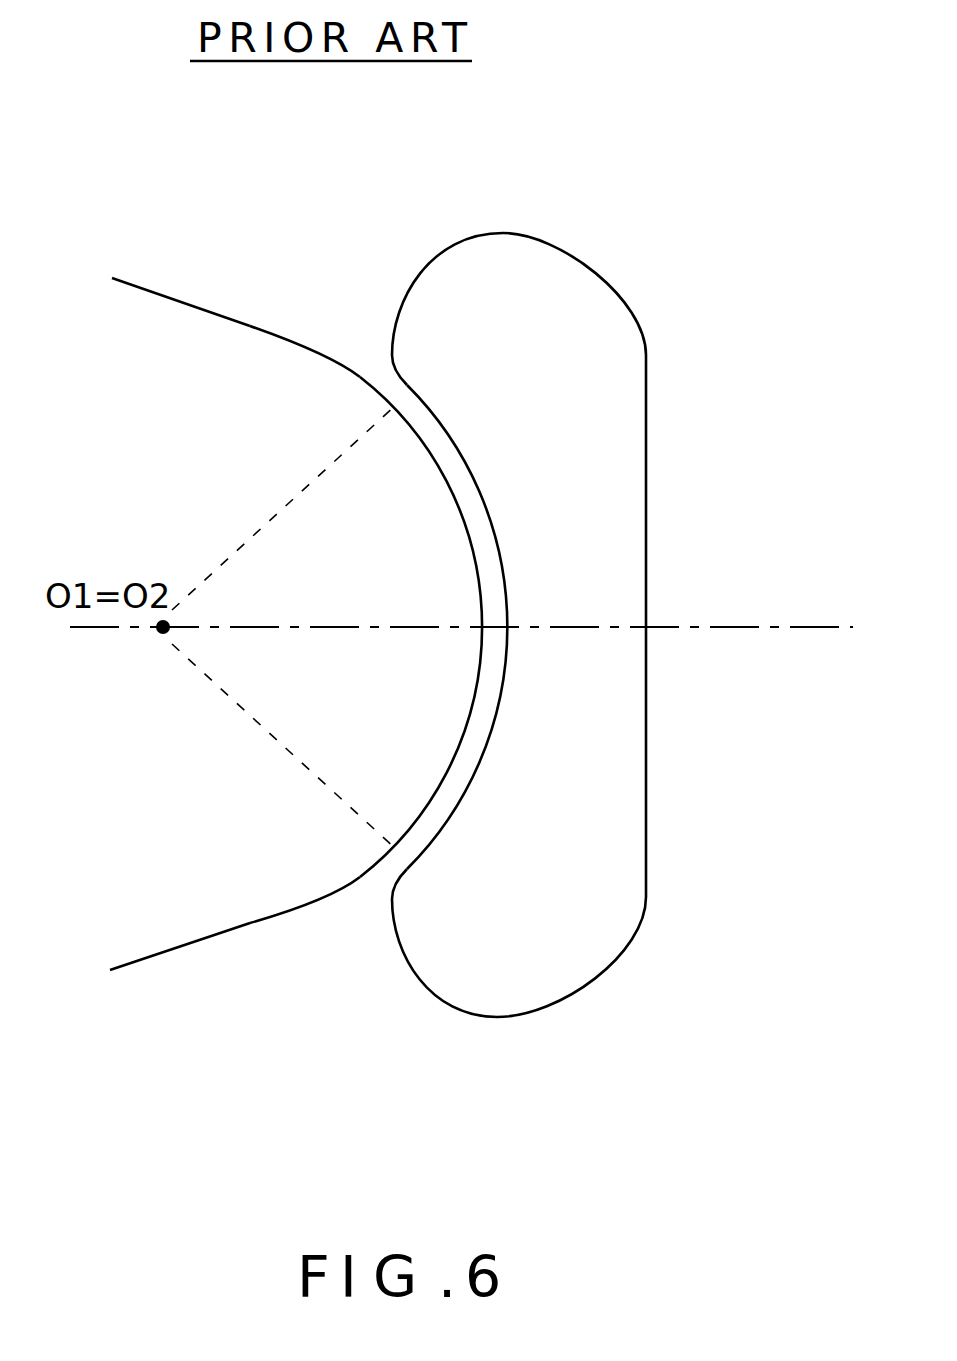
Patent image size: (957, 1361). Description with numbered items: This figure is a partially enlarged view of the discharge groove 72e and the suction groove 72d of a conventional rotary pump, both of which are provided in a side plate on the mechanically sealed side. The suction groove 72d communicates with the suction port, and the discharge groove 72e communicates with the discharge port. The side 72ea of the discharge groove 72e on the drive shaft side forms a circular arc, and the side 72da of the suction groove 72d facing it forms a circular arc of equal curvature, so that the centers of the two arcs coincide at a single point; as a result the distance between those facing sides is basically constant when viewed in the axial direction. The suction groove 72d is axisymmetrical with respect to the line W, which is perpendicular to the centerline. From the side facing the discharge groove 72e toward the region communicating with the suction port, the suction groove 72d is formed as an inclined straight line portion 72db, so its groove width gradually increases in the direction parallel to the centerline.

The suction groove 72d is at (213, 312).
The inclined straight line portion 72db is at (327, 353).
The side of the suction groove 72da is at (447, 767).
The discharge groove 72e is at (646, 485).
The side of the discharge groove 72ea is at (493, 725).
The line W is at (807, 627).